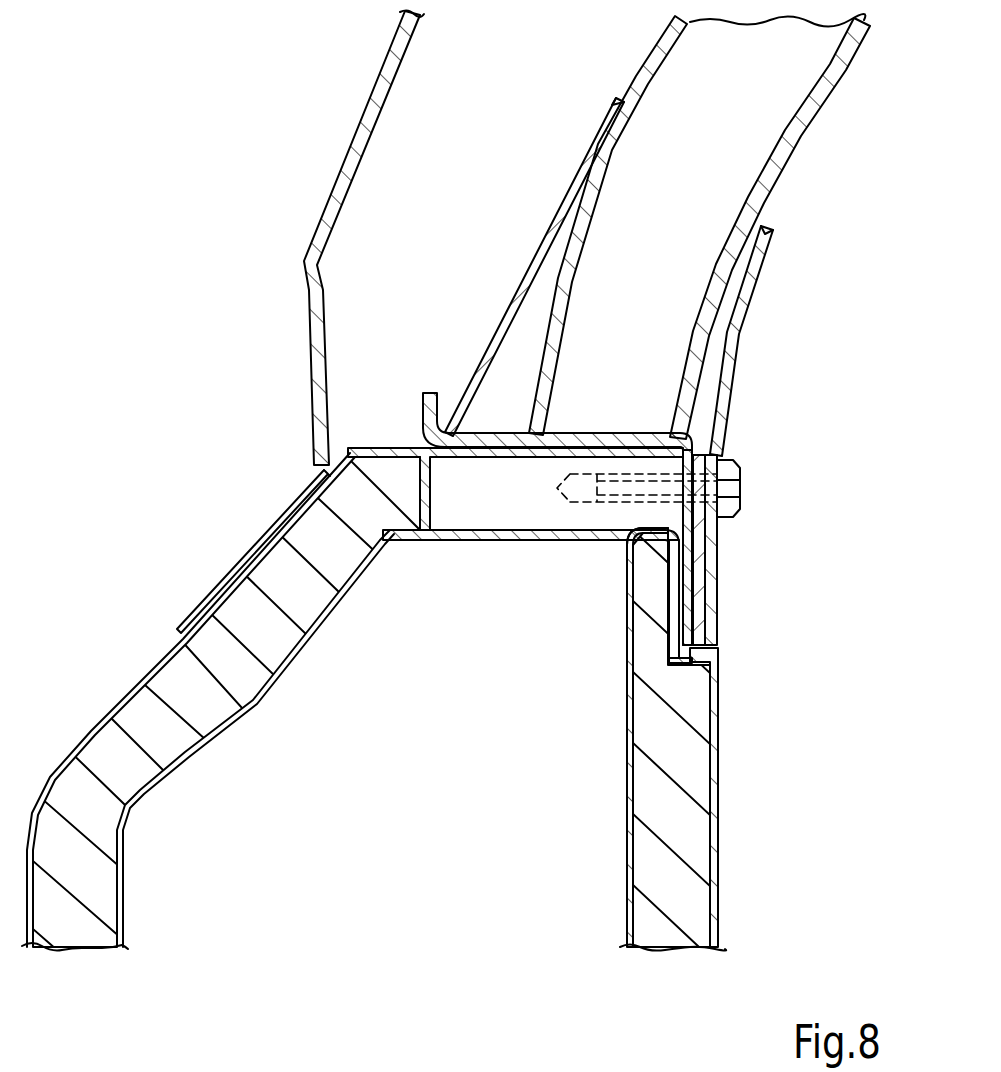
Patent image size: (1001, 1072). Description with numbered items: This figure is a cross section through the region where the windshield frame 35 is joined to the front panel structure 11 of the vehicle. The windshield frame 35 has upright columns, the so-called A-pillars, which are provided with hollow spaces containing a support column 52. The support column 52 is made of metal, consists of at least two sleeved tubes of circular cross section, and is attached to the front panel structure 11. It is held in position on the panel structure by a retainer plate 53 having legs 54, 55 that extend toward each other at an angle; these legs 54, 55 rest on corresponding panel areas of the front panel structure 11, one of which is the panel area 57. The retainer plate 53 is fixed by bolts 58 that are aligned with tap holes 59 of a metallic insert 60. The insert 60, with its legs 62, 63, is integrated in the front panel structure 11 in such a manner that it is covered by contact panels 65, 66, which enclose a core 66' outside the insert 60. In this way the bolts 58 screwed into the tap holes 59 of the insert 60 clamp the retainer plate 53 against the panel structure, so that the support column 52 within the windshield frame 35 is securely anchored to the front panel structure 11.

The front panel structure 11 is at (389, 570).
The windshield frame 35 is at (335, 298).
The support column 52 is at (762, 181).
The retainer plate 53 is at (622, 434).
The leg 54 is at (714, 558).
The leg 55 is at (556, 433).
The panel area 57 is at (702, 600).
The bolt 58 is at (740, 458).
The tap hole 59 is at (618, 545).
The metallic insert 60 is at (460, 503).
The leg 62 is at (702, 516).
The leg 63 is at (471, 476).
The contact panel 65 is at (718, 673).
The contact panel 66 is at (643, 739).
The core 66' is at (712, 737).